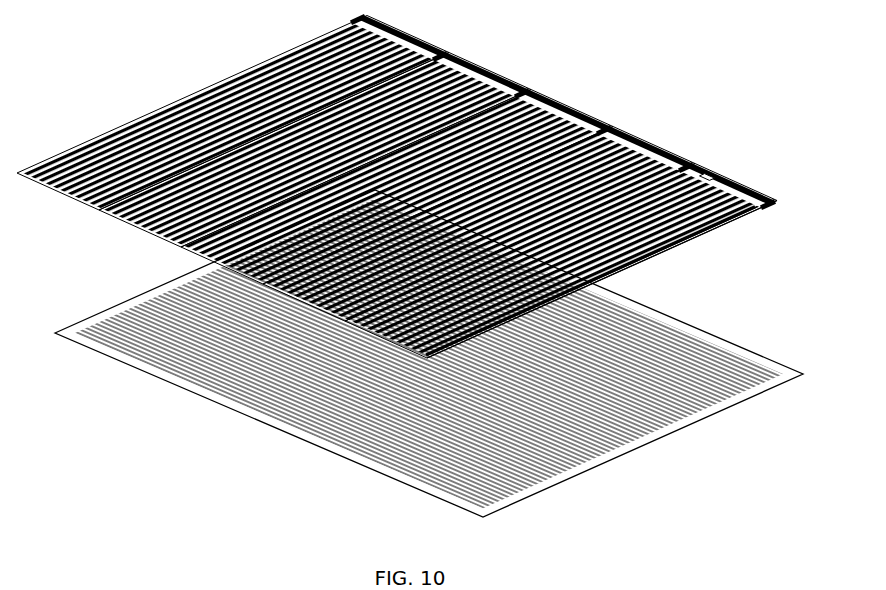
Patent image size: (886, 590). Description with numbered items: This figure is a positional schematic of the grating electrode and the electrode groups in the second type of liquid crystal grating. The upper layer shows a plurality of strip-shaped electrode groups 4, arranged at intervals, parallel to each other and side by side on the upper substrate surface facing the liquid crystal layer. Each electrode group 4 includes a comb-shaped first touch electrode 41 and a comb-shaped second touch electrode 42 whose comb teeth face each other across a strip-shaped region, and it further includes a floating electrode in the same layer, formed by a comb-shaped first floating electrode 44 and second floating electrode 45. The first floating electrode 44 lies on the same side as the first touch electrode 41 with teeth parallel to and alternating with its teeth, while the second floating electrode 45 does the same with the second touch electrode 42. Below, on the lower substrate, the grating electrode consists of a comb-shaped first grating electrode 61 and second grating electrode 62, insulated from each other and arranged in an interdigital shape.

The electrode group 4 is at (455, 48).
The first touch electrode 41 is at (704, 172).
The second touch electrode 42 is at (664, 259).
The first floating electrode 44 is at (741, 176).
The second floating electrode 45 is at (695, 245).
The first grating electrode 61 is at (122, 366).
The second grating electrode 62 is at (714, 332).